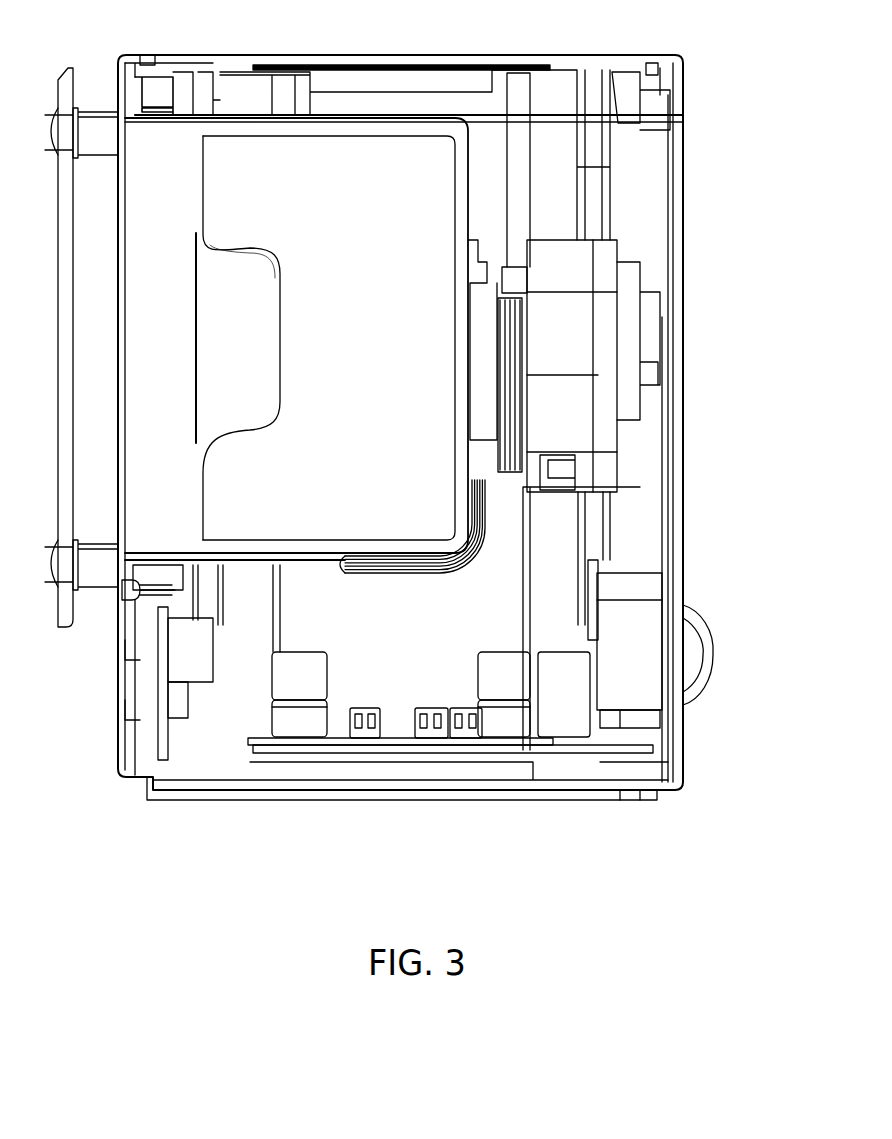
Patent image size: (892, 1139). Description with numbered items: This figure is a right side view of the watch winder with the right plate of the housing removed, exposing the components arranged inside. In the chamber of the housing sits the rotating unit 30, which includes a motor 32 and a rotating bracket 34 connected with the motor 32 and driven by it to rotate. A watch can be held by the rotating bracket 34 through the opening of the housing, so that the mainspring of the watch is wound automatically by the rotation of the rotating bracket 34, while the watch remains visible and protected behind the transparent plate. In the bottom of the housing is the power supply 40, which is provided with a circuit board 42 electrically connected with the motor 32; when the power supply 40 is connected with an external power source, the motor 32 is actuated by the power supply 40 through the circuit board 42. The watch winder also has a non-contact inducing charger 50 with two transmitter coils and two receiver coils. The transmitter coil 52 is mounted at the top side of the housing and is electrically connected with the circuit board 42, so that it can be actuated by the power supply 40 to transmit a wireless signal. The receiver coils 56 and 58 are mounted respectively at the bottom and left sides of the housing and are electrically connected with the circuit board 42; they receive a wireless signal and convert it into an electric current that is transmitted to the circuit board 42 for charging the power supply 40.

The rotating unit 30 is at (450, 371).
The motor 32 is at (570, 262).
The rotating bracket 34 is at (425, 195).
The power supply 40 is at (617, 528).
The circuit board 42 is at (430, 745).
The non-contact inducing charger 50 is at (410, 449).
The transmitter coil 52 is at (528, 65).
The receiver coil 56 is at (277, 783).
The receiver coil 58 is at (347, 563).